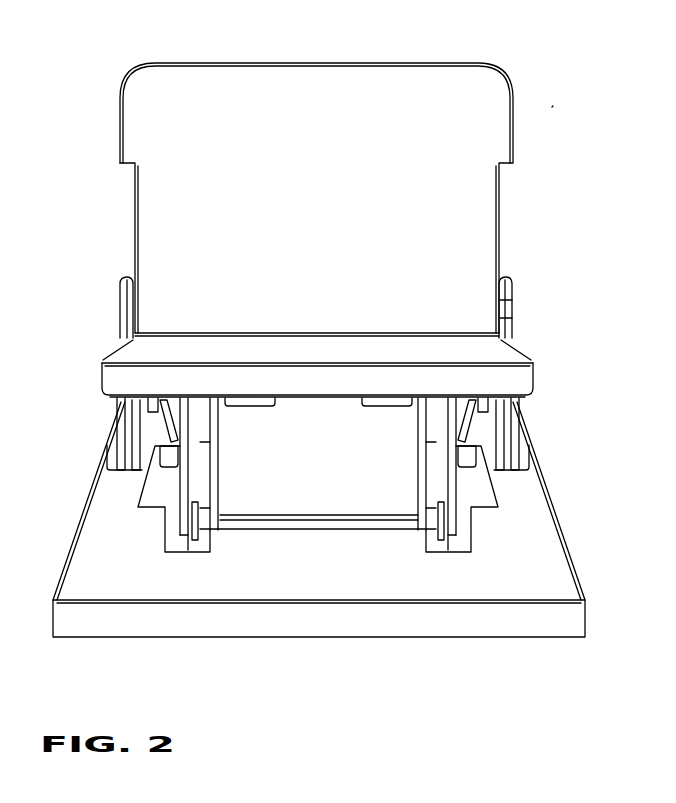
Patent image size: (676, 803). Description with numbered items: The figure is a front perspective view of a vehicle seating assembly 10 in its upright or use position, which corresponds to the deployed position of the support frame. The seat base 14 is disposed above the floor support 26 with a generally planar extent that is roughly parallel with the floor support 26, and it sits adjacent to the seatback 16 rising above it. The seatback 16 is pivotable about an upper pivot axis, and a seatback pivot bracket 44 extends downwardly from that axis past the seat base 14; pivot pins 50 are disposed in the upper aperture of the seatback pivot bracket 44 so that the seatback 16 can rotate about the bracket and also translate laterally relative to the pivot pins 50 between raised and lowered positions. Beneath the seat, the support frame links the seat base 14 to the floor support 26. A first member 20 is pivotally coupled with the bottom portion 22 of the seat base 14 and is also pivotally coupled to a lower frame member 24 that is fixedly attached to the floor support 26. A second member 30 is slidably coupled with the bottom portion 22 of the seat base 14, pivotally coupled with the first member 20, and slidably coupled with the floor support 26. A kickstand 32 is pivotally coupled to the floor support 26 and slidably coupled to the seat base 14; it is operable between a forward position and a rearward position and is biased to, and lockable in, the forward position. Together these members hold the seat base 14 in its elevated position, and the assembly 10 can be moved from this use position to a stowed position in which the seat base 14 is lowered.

The seating assembly 10 is at (552, 107).
The seatback 16 is at (460, 210).
The pivot pins 50 is at (120, 282).
The seatback pivot bracket 44 is at (505, 310).
The seat base 14 is at (500, 355).
The bottom portion 22 is at (520, 394).
The first member 20 is at (187, 513).
The lower frame member 24 is at (157, 490).
The second member 30 is at (183, 437).
The kickstand 32 is at (215, 490).
The floor support 26 is at (527, 572).